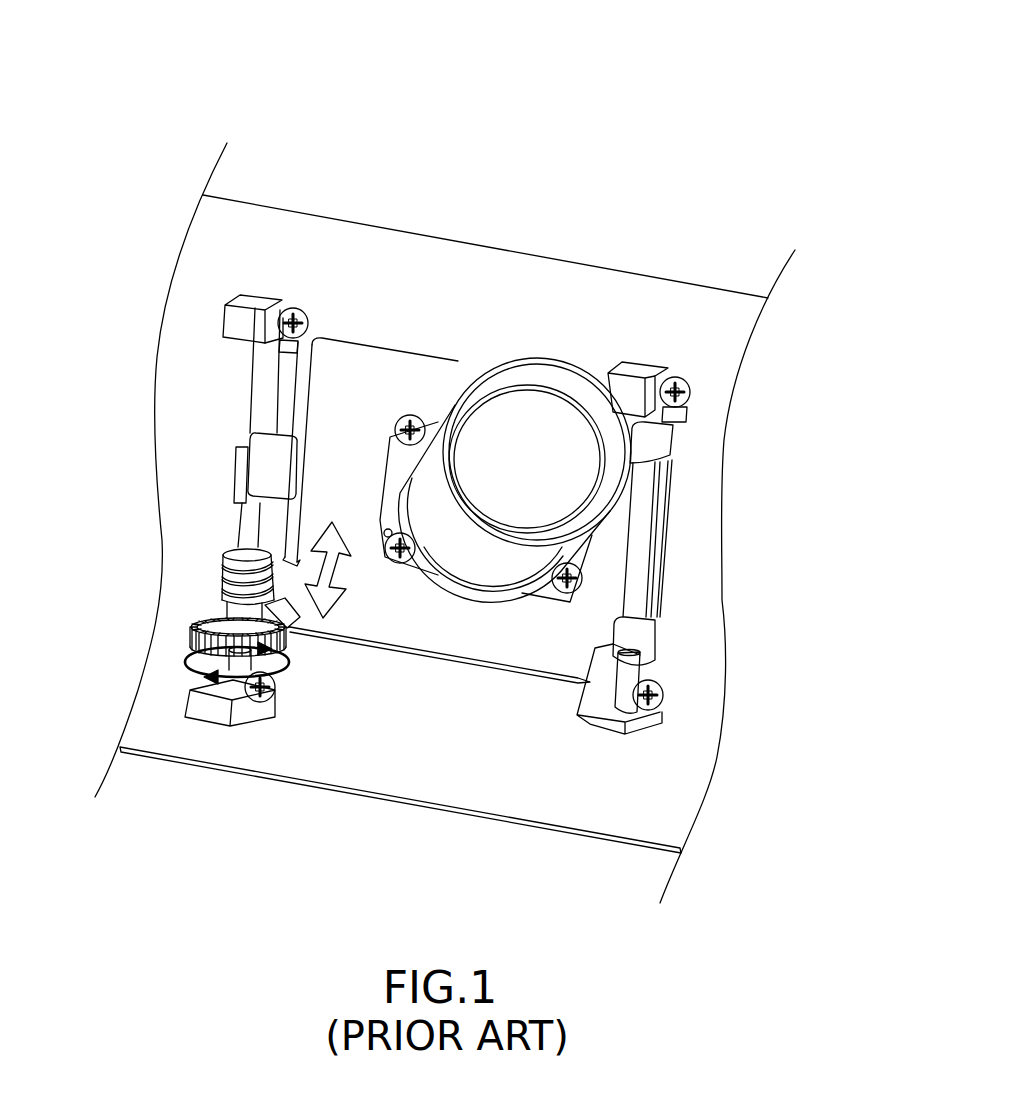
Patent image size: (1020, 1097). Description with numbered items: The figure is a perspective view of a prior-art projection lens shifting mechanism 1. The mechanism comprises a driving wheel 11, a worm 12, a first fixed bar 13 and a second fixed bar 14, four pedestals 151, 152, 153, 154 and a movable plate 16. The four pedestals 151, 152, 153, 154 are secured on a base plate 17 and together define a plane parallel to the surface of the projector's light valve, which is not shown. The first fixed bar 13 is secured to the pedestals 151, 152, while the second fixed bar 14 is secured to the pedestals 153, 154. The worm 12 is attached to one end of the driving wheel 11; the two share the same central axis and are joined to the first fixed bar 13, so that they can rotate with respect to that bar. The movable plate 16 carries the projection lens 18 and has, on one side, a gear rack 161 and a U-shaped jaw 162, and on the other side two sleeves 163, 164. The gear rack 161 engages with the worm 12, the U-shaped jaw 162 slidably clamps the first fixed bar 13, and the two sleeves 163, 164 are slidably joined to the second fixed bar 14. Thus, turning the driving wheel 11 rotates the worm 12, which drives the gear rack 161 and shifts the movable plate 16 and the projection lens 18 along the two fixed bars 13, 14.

The projection lens shifting mechanism 1 is at (562, 196).
The driving wheel 11 is at (192, 628).
The worm 12 is at (232, 578).
The first fixed bar 13 is at (243, 531).
The second fixed bar 14 is at (640, 562).
The movable plate 16 is at (417, 615).
The base plate 17 is at (560, 787).
The projection lens 18 is at (483, 562).
The pedestal 151 is at (214, 708).
The pedestal 152 is at (248, 320).
The pedestal 153 is at (630, 367).
The pedestal 154 is at (607, 722).
The gear rack 161 is at (310, 640).
The U-shaped jaw 162 is at (270, 458).
The sleeve 163 is at (640, 633).
The sleeve 164 is at (658, 442).